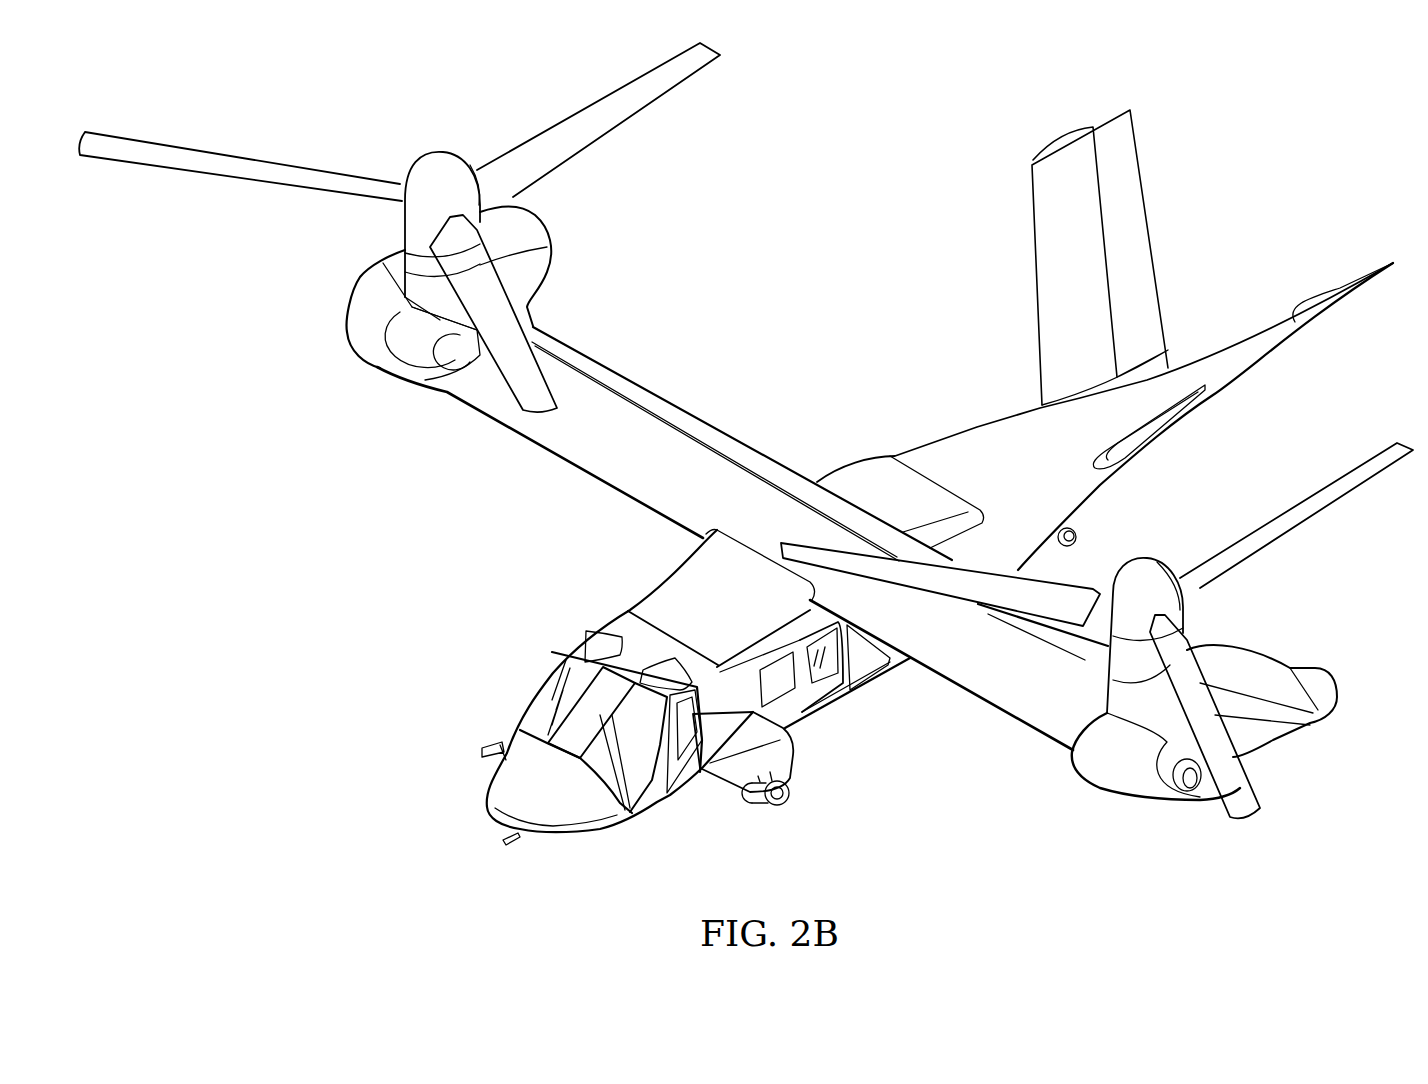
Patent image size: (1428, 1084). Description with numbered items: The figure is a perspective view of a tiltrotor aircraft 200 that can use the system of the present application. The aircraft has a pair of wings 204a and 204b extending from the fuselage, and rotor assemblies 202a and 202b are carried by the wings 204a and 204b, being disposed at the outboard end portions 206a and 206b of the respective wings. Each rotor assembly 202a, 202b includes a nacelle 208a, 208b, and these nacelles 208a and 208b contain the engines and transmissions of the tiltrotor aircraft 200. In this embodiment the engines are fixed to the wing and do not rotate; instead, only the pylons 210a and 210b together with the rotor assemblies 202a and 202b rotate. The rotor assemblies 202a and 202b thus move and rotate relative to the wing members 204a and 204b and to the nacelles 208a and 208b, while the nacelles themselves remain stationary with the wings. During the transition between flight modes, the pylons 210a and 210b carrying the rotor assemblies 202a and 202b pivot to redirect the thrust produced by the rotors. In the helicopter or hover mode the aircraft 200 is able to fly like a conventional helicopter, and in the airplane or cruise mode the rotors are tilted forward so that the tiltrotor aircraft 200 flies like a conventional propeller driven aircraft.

The tiltrotor aircraft 200 is at (1228, 88).
The rotor assembly 202a is at (575, 242).
The rotor assembly 202b is at (1210, 614).
The wing 204a is at (602, 460).
The wing 204b is at (968, 672).
The end portion of wing 206a is at (533, 314).
The end portion of wing 206b is at (1075, 765).
The nacelle 208a is at (362, 342).
The nacelle 208b is at (1273, 732).
The pylon 210a is at (417, 252).
The pylon 210b is at (1117, 658).